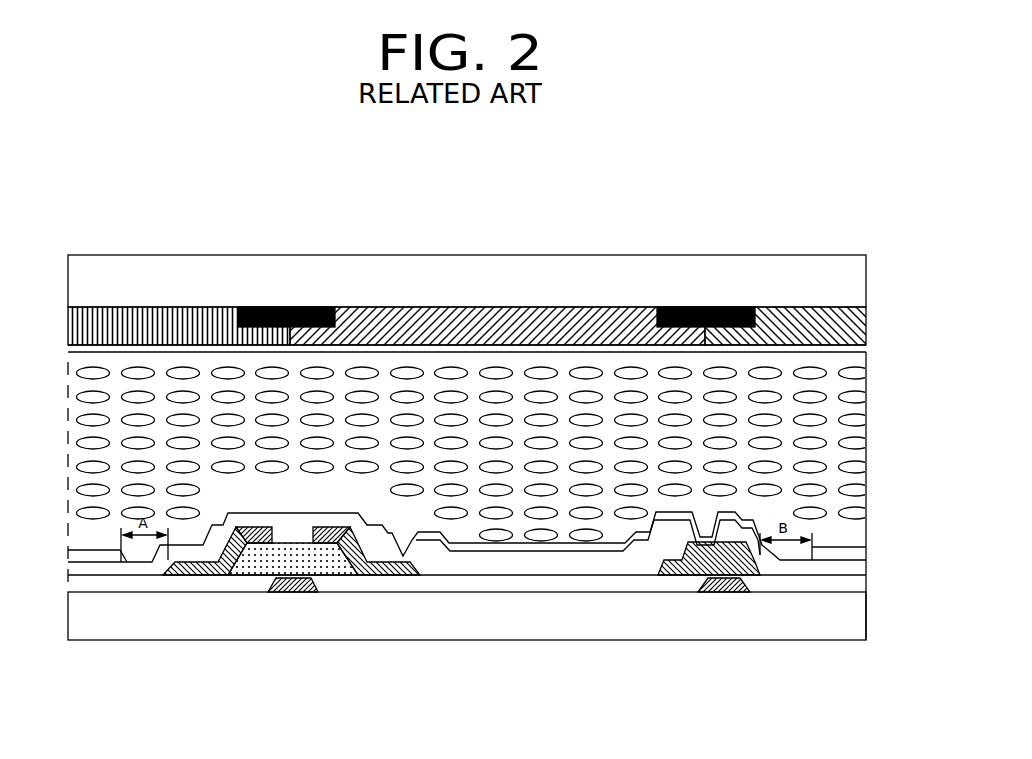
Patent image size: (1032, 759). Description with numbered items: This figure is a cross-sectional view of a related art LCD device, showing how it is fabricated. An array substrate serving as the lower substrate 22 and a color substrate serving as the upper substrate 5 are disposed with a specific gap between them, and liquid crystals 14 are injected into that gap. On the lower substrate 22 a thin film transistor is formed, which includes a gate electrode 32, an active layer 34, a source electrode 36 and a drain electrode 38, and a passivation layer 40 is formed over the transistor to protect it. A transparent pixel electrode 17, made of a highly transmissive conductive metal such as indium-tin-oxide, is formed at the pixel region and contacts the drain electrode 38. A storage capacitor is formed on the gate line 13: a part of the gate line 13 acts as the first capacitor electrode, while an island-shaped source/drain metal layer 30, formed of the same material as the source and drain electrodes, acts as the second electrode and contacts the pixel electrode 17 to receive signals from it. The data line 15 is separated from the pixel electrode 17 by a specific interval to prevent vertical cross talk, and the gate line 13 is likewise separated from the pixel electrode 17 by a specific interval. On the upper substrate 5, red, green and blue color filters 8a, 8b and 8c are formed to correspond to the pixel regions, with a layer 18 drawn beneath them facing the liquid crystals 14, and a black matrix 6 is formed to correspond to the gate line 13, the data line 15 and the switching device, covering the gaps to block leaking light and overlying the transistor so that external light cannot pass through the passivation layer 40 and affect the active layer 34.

The upper substrate 5 is at (483, 289).
The red color filter 8a is at (140, 332).
The green color filter 8b is at (556, 322).
The blue color filter 8c is at (811, 323).
The black matrix 6 is at (279, 307).
The common electrode 18 is at (860, 352).
The liquid crystals 14 is at (850, 430).
The pixel electrode 17 is at (95, 556).
The passivation layer 40 is at (293, 513).
The lower substrate 22 is at (850, 615).
The gate line 13 is at (728, 592).
The source/drain metal layer 30 is at (673, 562).
The data line 15 is at (215, 575).
The gate electrode 32 is at (295, 592).
The active layer 34 is at (347, 575).
The source electrode 36 is at (252, 527).
The drain electrode 38 is at (330, 527).